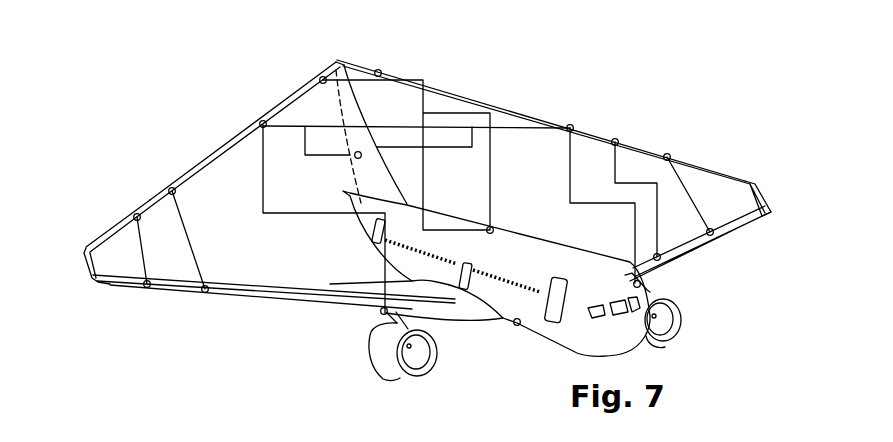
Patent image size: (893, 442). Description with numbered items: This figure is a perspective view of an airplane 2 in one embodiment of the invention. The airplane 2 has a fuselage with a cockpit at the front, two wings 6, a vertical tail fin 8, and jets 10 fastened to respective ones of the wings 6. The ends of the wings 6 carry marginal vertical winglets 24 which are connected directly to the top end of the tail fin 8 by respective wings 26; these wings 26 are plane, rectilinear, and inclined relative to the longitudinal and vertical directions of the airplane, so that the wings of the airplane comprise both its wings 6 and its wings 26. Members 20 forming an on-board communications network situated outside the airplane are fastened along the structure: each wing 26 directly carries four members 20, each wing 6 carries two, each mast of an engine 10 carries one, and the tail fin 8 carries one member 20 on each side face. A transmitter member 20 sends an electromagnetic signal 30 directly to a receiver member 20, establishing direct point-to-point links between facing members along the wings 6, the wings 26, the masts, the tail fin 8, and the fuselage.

The airplane 2 is at (645, 90).
The wing 6 is at (247, 294).
The tail fin 8 is at (347, 102).
The jet 10 is at (383, 355).
The member 20 is at (375, 70).
The marginal vertical winglet 24 is at (88, 260).
The wing 26 is at (203, 163).
The electromagnetic signal 30 is at (112, 233).